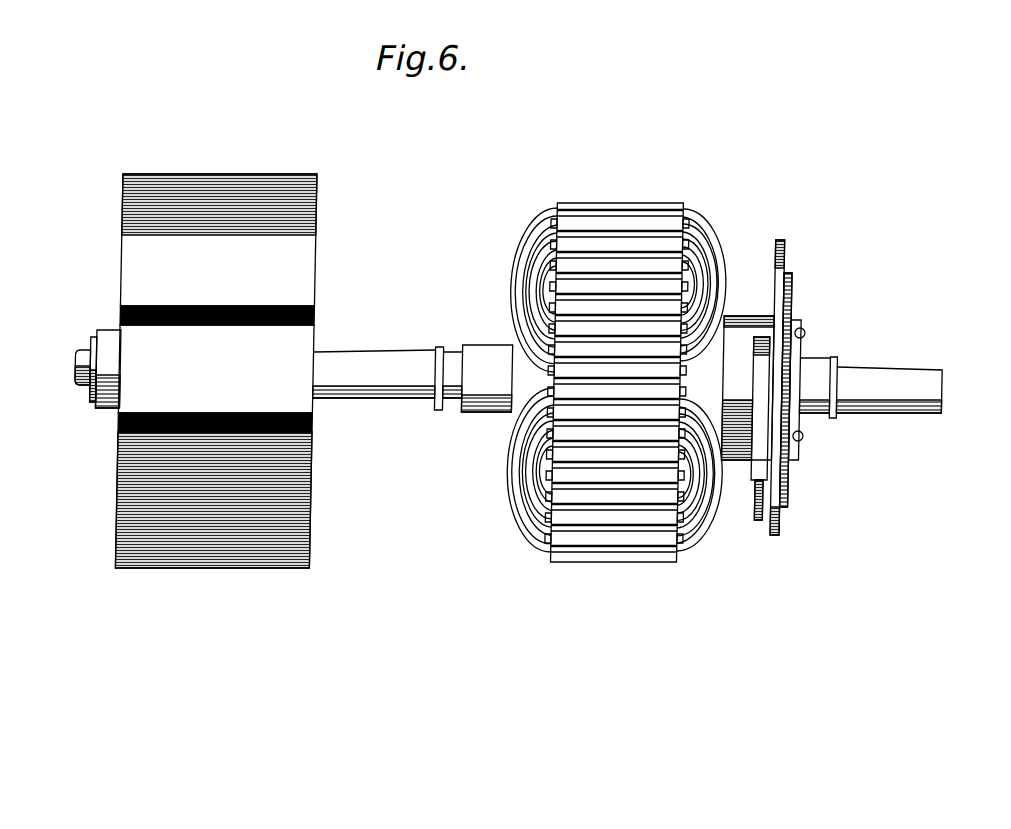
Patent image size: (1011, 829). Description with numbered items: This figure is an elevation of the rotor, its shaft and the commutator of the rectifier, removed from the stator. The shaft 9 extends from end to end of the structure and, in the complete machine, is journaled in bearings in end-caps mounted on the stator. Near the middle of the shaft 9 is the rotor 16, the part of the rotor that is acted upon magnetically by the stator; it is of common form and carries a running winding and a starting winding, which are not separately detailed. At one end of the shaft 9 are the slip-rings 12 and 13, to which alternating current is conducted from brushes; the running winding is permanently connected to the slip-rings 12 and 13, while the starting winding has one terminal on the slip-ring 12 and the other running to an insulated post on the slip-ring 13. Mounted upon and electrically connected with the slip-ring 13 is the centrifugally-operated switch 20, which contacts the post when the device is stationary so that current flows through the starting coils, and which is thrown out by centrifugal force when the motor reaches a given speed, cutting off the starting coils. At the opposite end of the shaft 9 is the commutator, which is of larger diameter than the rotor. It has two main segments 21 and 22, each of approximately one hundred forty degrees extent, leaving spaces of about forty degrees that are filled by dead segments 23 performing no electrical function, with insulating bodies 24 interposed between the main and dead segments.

The shaft 9 is at (367, 368).
The slip-ring 12 is at (789, 292).
The slip-ring 13 is at (783, 252).
The rotor 16 is at (623, 553).
The centrifugally-operated switch 20 is at (760, 512).
The main commutator segment 21 is at (131, 285).
The main commutator segment 22 is at (132, 503).
The dead segment 23 is at (216, 369).
The insulating body 24 is at (274, 326).